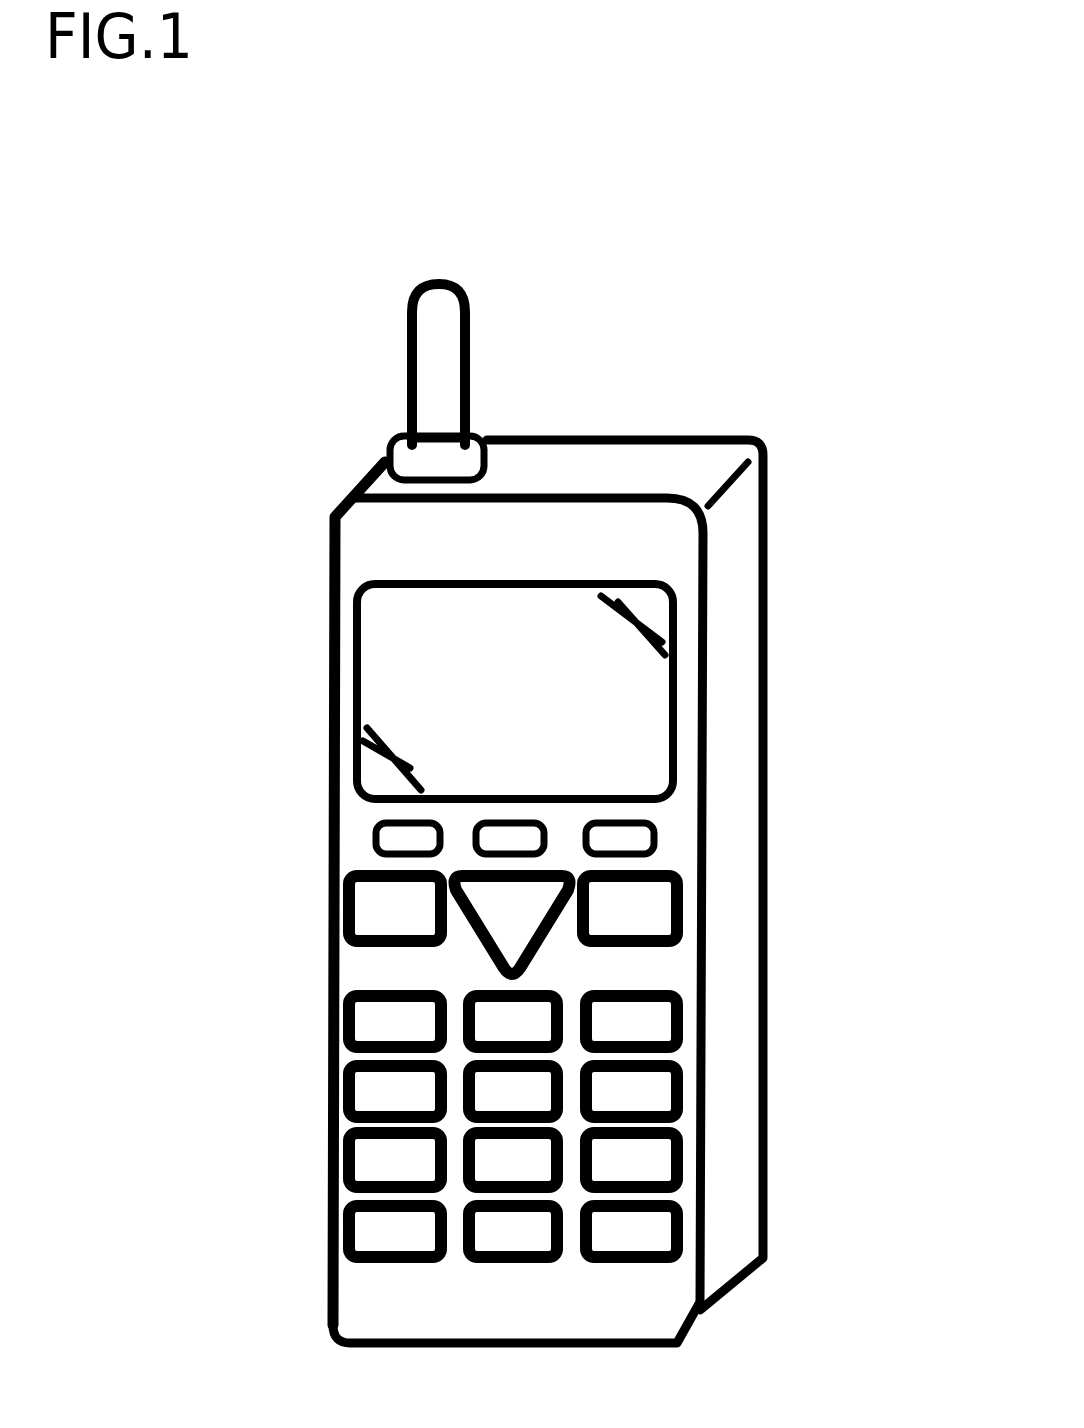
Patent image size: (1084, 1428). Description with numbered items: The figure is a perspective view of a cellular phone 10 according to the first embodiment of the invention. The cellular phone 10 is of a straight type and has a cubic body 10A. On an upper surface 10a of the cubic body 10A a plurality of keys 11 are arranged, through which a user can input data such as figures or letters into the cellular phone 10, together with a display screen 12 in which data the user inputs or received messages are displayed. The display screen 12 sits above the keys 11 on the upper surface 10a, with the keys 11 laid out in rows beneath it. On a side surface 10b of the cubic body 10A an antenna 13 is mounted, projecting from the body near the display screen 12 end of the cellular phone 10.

The cellular phone 10 is at (596, 806).
The cubic body 10A is at (745, 566).
The upper surface 10a is at (673, 840).
The side surface 10b is at (548, 447).
The keys 11 is at (677, 1063).
The display screen 12 is at (643, 681).
The antenna 13 is at (410, 398).